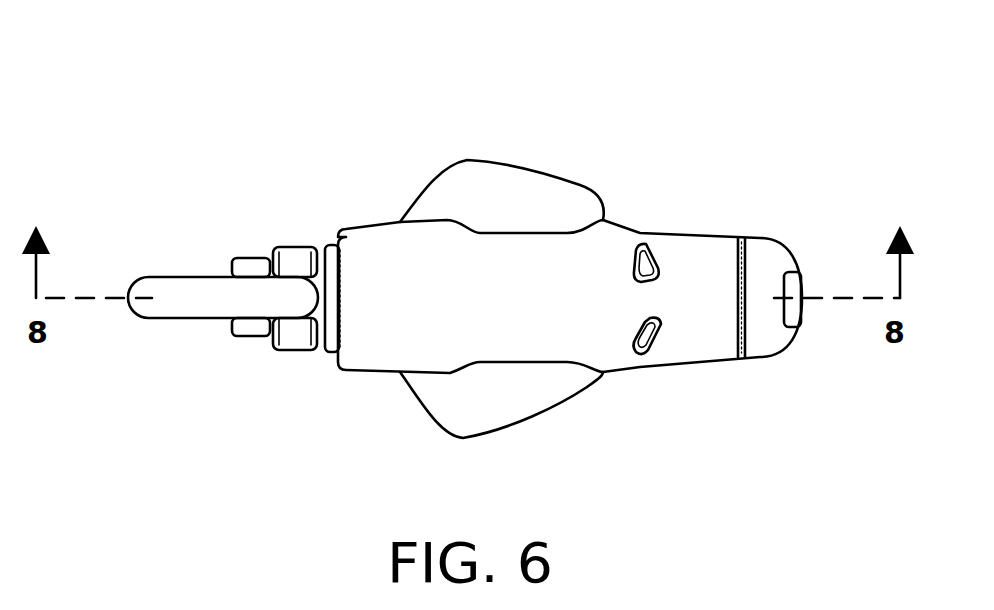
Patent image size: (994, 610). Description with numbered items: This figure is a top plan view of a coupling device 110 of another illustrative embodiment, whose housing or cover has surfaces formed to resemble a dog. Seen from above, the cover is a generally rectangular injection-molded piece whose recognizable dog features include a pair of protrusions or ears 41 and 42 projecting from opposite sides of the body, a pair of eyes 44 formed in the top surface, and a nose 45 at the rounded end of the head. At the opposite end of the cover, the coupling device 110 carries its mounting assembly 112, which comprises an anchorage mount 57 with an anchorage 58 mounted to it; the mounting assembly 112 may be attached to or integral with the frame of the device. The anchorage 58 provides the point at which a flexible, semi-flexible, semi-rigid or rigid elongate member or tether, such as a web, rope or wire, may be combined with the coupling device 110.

The coupling device 110 is at (304, 116).
The mounting assembly 112 is at (286, 381).
The ear 41 is at (493, 432).
The ear 42 is at (465, 157).
The eyes 44 is at (655, 262).
The nose 45 is at (796, 283).
The anchorage mount 57 is at (248, 337).
The anchorage 58 is at (196, 286).